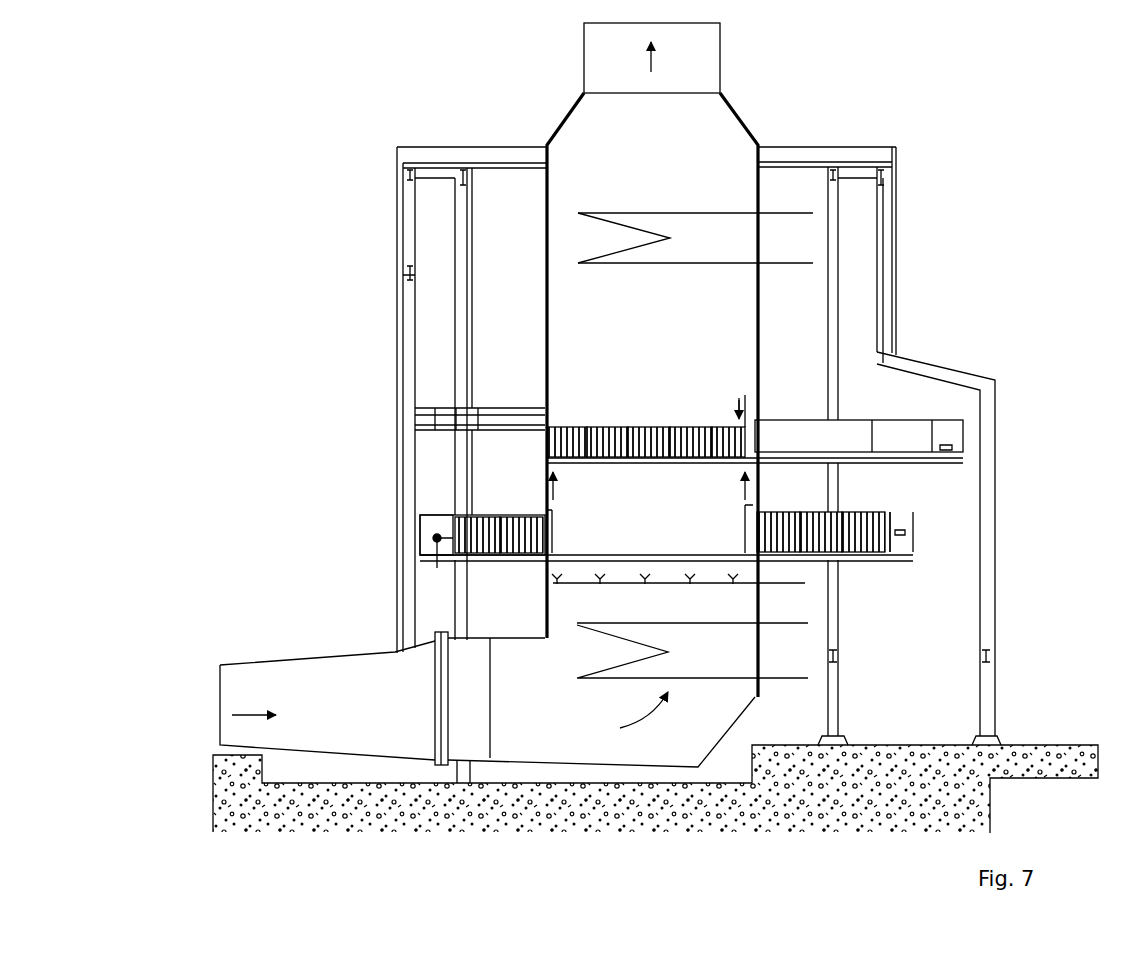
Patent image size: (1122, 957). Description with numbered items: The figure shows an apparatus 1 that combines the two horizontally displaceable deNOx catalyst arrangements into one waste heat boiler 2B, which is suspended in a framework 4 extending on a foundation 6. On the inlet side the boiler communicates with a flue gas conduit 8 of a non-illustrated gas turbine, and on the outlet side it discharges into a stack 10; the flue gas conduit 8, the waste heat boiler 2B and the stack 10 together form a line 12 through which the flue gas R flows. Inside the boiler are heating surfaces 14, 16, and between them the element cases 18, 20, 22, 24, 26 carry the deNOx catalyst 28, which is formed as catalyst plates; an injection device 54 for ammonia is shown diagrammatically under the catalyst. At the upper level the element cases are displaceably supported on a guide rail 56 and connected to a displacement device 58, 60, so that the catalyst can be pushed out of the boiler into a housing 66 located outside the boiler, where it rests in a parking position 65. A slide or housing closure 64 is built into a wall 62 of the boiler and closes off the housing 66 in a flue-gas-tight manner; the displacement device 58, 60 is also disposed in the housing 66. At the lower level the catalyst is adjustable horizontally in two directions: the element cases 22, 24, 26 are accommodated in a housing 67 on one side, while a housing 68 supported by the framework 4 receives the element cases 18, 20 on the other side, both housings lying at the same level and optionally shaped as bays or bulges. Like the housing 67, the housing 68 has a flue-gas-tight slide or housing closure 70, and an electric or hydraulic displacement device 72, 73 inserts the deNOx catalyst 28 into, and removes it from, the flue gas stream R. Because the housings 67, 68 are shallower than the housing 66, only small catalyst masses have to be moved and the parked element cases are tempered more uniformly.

The apparatus 1 is at (822, 120).
The waste heat boiler 2B is at (740, 318).
The framework 4 is at (470, 237).
The foundation 6 is at (215, 805).
The flue gas conduit 8 is at (288, 692).
The stack 10 is at (722, 44).
The line 12 is at (727, 70).
The heating surface 14 is at (675, 624).
The heating surface 16 is at (654, 214).
The element case 18 is at (557, 427).
The element case 20 is at (599, 427).
The element case 22 is at (640, 427).
The element case 24 is at (682, 427).
The element case 26 is at (728, 427).
The deNOx catalyst 28 is at (572, 447).
The injection device 54 is at (765, 588).
The guide rail 56 is at (622, 462).
The displacement device 58 is at (872, 420).
The displacement device 60 is at (954, 440).
The wall 62 is at (756, 368).
The slide or housing closure 64 is at (756, 405).
The parking position 65 is at (850, 430).
The housing 66 is at (805, 420).
The housing 67 is at (870, 512).
The housing 68 is at (437, 515).
The slide or housing closure 70 is at (557, 512).
The displacement device 72 is at (420, 540).
The displacement device 73 is at (438, 562).